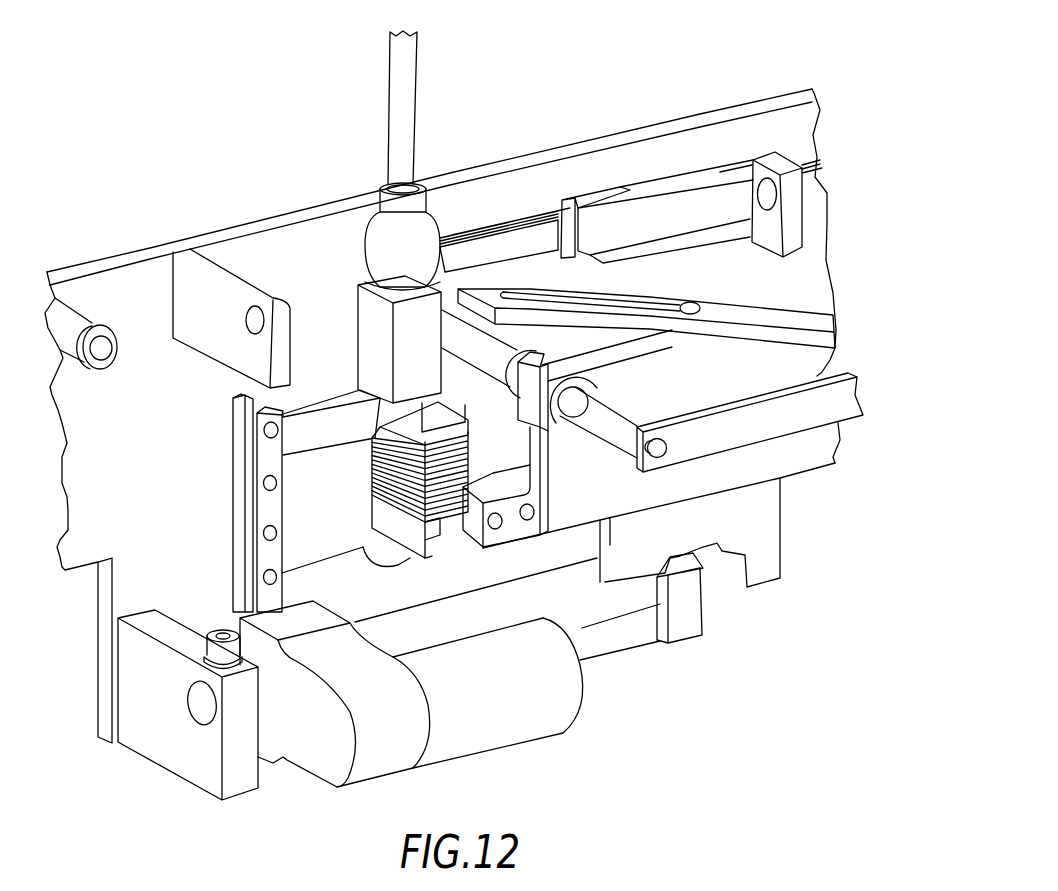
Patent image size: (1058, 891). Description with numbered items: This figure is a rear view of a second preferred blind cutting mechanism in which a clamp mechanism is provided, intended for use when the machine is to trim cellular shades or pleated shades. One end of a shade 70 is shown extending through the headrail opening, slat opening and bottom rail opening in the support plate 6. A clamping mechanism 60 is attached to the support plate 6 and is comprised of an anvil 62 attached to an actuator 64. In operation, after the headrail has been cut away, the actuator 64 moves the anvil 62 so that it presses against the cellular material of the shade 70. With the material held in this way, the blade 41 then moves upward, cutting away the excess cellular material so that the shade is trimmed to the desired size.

The support plate 6 is at (668, 122).
The blade 41 is at (333, 562).
The clamping mechanism 60 is at (455, 146).
The anvil 62 is at (370, 330).
The actuator 64 is at (392, 124).
The shade 70 is at (383, 470).